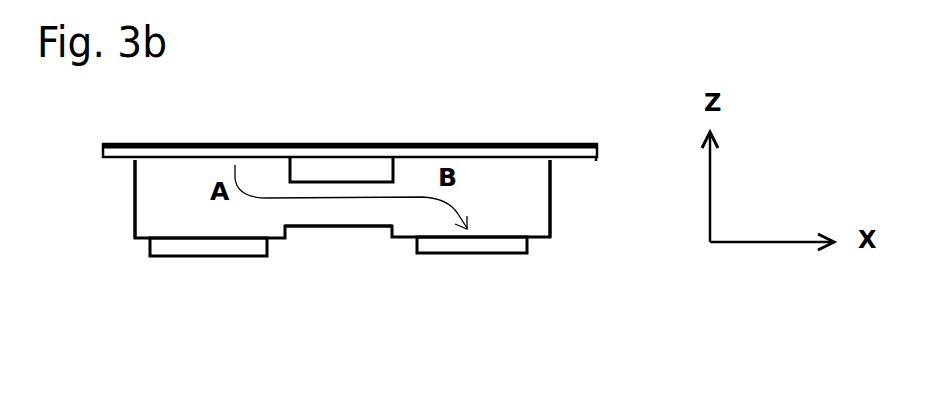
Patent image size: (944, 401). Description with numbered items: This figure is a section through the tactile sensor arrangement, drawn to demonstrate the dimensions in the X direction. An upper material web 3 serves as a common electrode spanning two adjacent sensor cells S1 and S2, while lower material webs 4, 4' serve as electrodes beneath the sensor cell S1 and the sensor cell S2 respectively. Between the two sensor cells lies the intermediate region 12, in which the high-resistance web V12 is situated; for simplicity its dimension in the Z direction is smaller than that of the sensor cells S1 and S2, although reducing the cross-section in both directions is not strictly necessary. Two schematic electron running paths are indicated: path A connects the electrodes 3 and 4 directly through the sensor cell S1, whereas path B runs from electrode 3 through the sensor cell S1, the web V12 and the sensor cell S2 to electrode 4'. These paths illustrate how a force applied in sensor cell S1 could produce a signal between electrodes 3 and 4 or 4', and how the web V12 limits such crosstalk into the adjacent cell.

The material web 3 is at (203, 233).
The intermediate region 12 is at (368, 233).
The web V12 is at (345, 217).
The sensor cell S1 is at (143, 205).
The sensor cell S2 is at (537, 198).
The material web 4 is at (195, 283).
The material web 4' is at (465, 278).